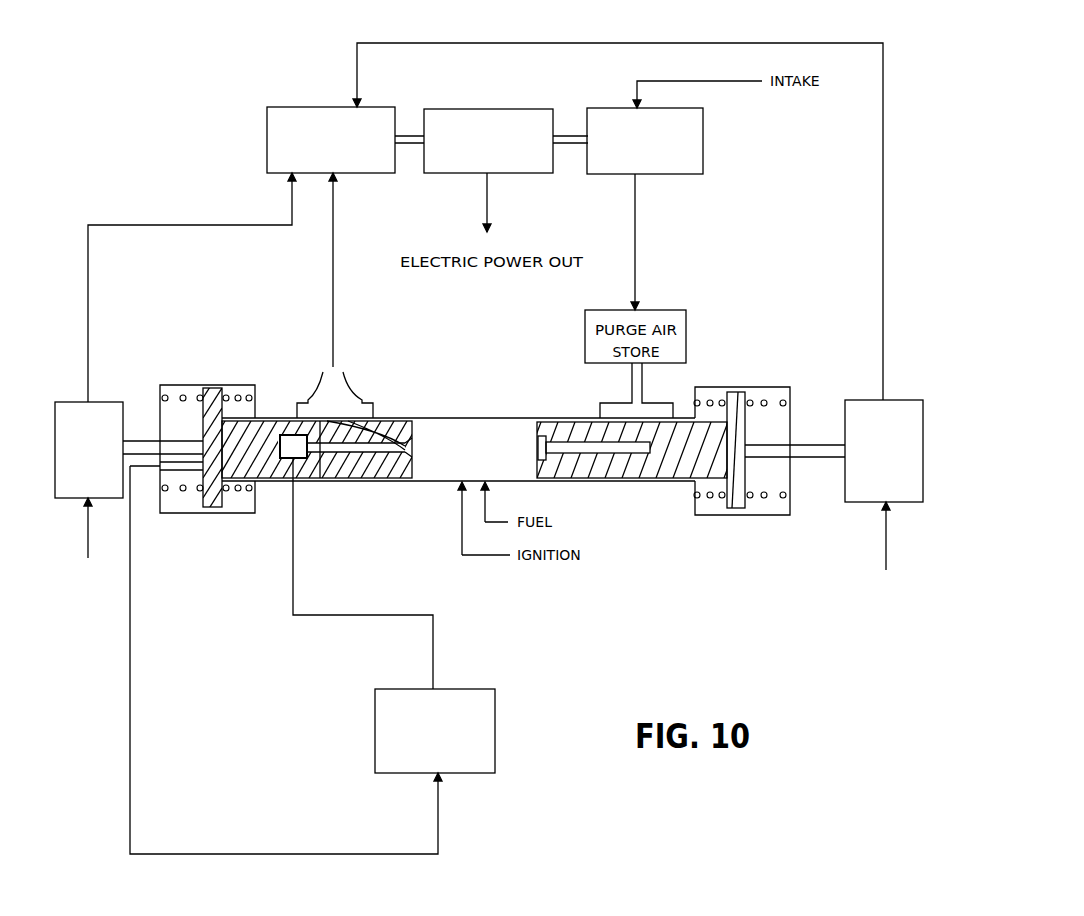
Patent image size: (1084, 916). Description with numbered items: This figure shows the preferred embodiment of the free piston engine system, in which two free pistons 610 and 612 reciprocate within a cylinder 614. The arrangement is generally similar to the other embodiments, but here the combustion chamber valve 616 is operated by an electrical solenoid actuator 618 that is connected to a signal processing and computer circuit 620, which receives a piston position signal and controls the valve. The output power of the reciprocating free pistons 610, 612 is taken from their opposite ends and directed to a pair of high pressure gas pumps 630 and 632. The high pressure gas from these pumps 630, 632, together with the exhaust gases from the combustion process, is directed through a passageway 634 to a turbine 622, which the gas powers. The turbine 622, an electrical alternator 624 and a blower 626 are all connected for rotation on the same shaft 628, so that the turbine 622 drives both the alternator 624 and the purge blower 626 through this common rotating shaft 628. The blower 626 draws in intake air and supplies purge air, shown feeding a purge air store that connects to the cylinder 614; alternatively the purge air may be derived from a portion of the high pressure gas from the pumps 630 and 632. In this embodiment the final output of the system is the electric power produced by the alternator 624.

The free piston 610 is at (393, 432).
The free piston 612 is at (662, 465).
The cylinder 614 is at (527, 413).
The combustion chamber valve 616 is at (412, 448).
The electrical solenoid actuator 618 is at (308, 417).
The signal processing and computer circuit 620 is at (483, 703).
The turbine 622 is at (277, 124).
The electrical alternator 624 is at (458, 117).
The blower 626 is at (688, 163).
The shaft 628 is at (410, 145).
The high pressure gas pump 630 is at (118, 402).
The high pressure gas pump 632 is at (858, 400).
The passageway 634 is at (333, 283).